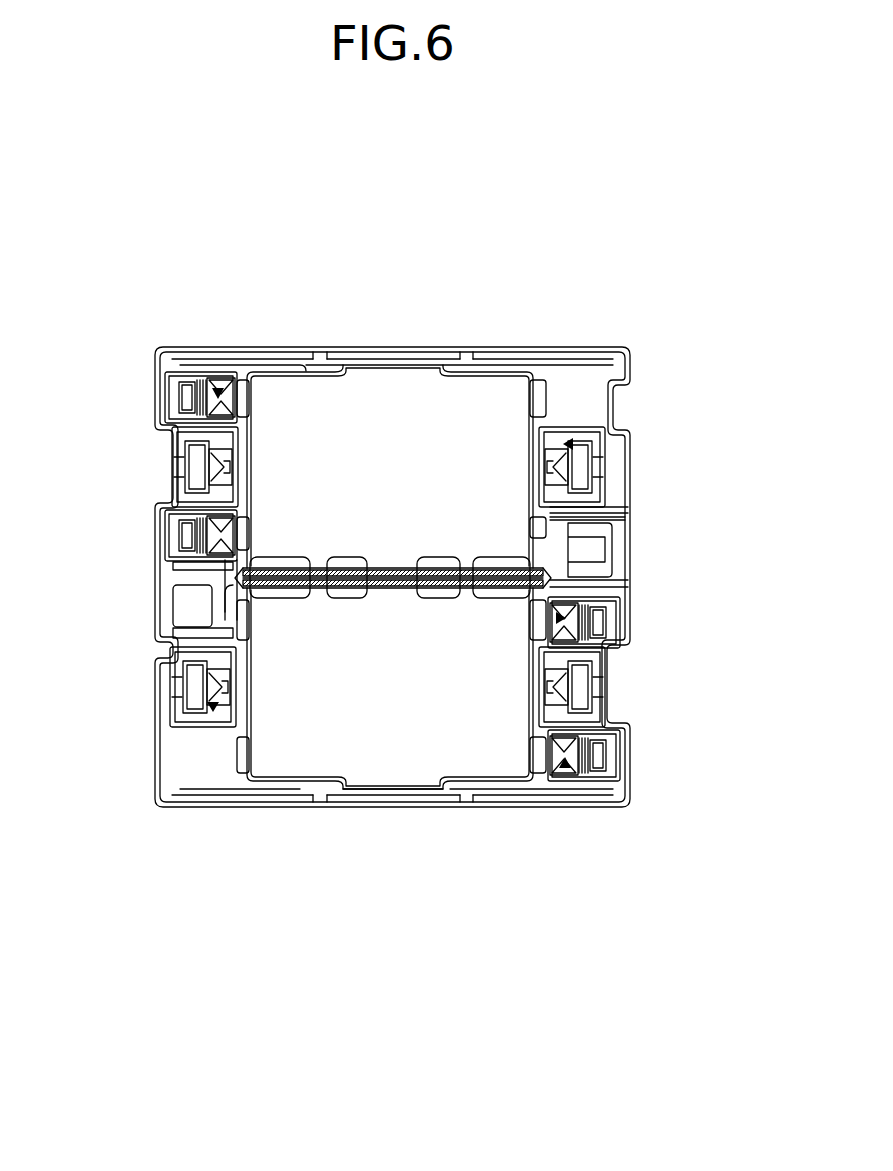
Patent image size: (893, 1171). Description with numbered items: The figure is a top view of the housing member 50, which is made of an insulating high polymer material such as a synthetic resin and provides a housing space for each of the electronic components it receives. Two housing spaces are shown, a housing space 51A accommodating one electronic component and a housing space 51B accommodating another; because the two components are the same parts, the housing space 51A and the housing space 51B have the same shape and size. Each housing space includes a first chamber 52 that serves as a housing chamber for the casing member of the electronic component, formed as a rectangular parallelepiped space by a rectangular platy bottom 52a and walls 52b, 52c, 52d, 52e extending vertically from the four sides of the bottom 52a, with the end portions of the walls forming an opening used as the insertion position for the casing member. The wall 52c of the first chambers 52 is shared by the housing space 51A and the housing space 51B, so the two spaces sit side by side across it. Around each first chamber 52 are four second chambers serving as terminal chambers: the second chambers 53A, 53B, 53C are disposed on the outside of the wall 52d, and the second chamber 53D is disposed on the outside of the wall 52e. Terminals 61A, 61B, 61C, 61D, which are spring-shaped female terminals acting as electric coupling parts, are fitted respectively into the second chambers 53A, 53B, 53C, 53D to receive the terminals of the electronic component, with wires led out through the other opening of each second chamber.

The housing member 50 is at (556, 160).
The housing space 51A is at (688, 925).
The housing space 51B is at (632, 235).
The first chamber 52 is at (467, 405).
The bottom 52a is at (420, 395).
The wall 52b is at (322, 352).
The wall 52c is at (385, 600).
The wall 52d is at (275, 393).
The wall 52e is at (520, 400).
The second chamber 53A is at (218, 385).
The second chamber 53B is at (255, 458).
The second chamber 53C is at (257, 535).
The second chamber 53D is at (572, 443).
The terminal 61A is at (185, 405).
The terminal 61B is at (205, 467).
The terminal 61C is at (195, 528).
The terminal 61D is at (190, 693).